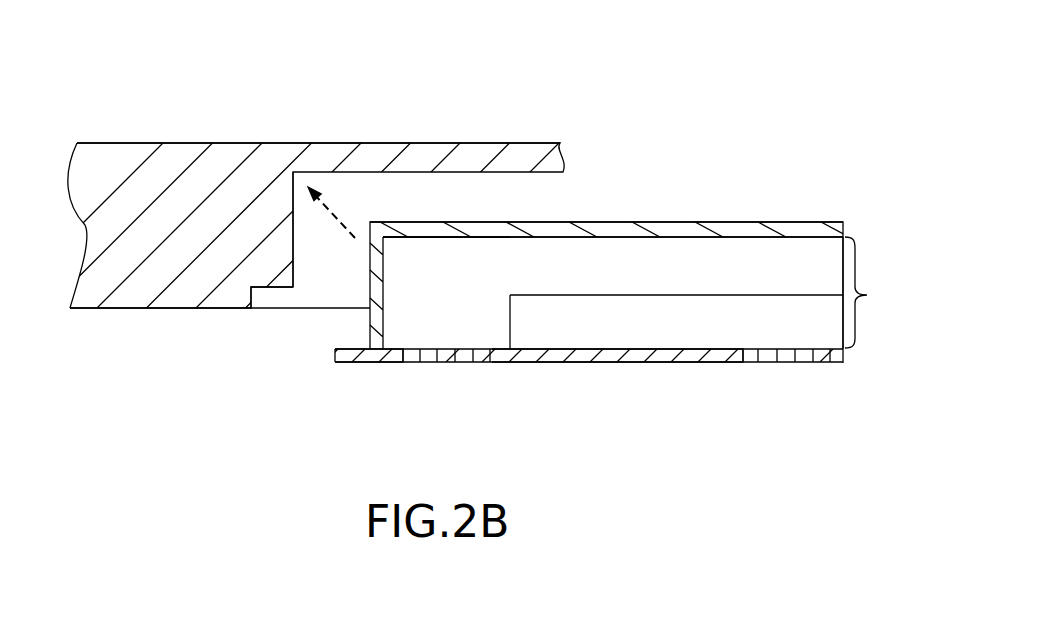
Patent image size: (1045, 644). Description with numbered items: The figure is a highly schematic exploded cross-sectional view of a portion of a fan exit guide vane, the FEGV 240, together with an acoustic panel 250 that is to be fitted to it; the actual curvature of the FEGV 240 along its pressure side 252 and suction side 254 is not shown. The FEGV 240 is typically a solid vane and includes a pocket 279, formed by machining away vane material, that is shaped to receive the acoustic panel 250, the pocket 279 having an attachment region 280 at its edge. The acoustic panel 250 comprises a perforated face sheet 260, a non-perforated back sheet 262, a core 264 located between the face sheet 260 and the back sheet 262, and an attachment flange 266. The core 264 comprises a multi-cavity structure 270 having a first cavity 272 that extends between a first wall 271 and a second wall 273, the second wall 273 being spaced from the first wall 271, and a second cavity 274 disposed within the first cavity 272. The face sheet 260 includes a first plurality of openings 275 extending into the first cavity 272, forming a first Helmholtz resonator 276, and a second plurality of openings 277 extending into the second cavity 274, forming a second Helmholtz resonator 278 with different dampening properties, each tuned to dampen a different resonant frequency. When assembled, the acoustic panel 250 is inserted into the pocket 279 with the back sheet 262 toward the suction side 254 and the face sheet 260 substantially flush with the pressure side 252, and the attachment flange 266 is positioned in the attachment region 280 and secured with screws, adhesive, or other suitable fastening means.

The FEGV 240 is at (205, 120).
The suction side 254 is at (108, 143).
The pressure side 252 is at (141, 308).
The attachment region 280 is at (260, 298).
The pocket 279 is at (323, 265).
The acoustic panel 250 is at (613, 270).
The back sheet 262 is at (830, 222).
The multi-cavity structure 270 is at (610, 258).
The first cavity 272 is at (470, 258).
The first Helmholtz resonator 276 is at (544, 277).
The second Helmholtz resonator 278 is at (675, 336).
The second wall 273 is at (843, 267).
The core 264 is at (875, 292).
The first wall 271 is at (383, 316).
The attachment flange 266 is at (347, 363).
The first plurality of openings 275 is at (410, 365).
The second cavity 274 is at (563, 340).
The face sheet 260 is at (645, 363).
The second plurality of openings 277 is at (748, 363).